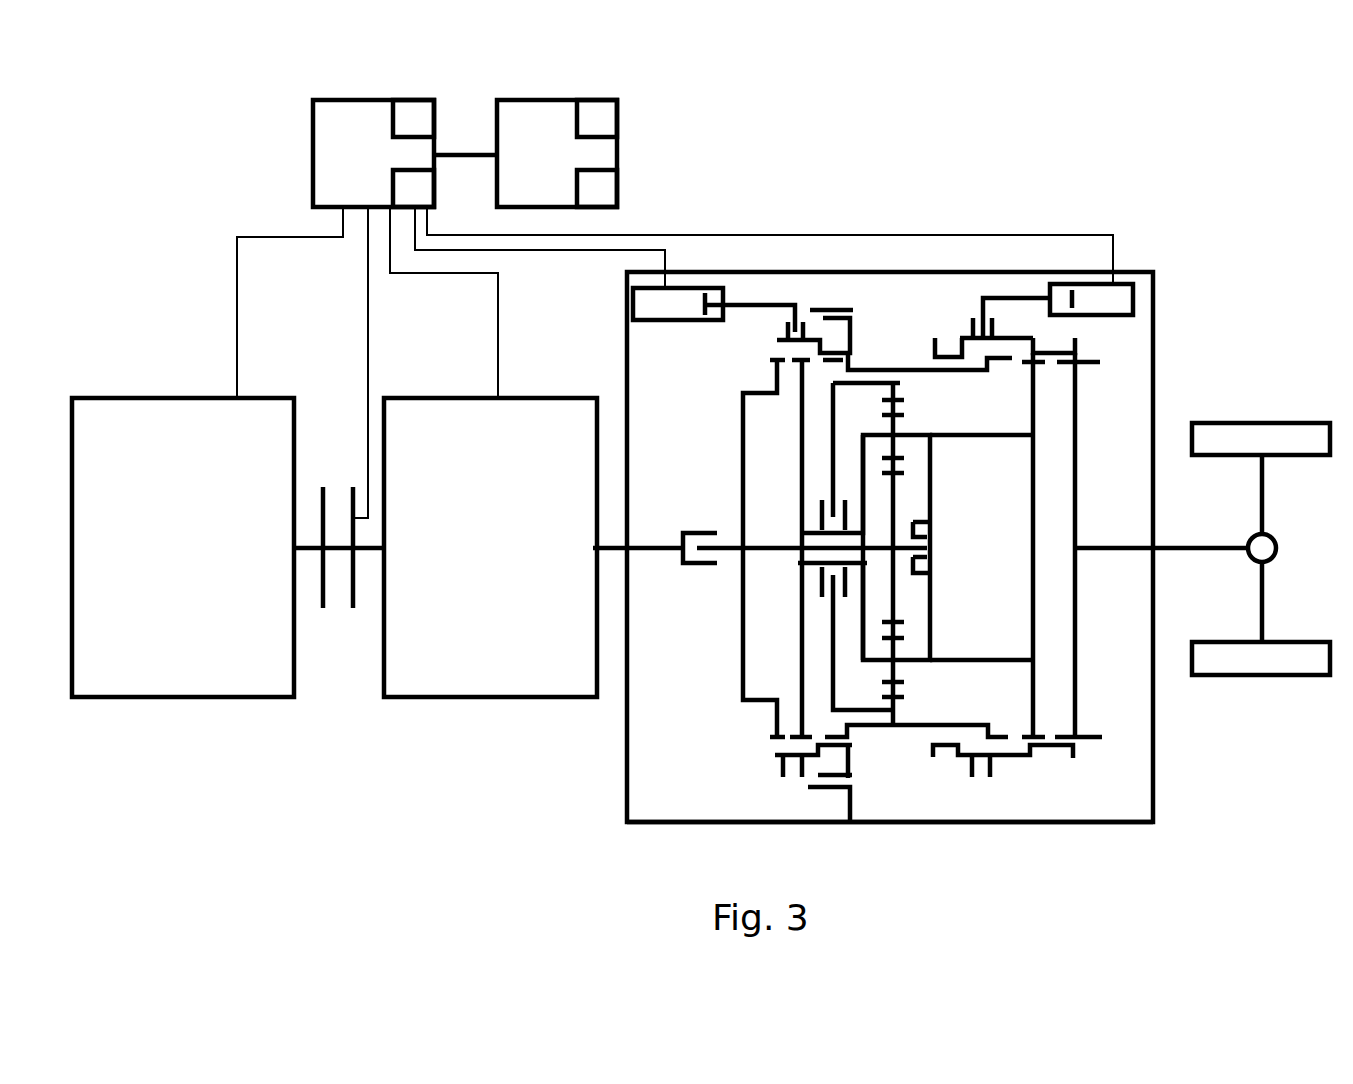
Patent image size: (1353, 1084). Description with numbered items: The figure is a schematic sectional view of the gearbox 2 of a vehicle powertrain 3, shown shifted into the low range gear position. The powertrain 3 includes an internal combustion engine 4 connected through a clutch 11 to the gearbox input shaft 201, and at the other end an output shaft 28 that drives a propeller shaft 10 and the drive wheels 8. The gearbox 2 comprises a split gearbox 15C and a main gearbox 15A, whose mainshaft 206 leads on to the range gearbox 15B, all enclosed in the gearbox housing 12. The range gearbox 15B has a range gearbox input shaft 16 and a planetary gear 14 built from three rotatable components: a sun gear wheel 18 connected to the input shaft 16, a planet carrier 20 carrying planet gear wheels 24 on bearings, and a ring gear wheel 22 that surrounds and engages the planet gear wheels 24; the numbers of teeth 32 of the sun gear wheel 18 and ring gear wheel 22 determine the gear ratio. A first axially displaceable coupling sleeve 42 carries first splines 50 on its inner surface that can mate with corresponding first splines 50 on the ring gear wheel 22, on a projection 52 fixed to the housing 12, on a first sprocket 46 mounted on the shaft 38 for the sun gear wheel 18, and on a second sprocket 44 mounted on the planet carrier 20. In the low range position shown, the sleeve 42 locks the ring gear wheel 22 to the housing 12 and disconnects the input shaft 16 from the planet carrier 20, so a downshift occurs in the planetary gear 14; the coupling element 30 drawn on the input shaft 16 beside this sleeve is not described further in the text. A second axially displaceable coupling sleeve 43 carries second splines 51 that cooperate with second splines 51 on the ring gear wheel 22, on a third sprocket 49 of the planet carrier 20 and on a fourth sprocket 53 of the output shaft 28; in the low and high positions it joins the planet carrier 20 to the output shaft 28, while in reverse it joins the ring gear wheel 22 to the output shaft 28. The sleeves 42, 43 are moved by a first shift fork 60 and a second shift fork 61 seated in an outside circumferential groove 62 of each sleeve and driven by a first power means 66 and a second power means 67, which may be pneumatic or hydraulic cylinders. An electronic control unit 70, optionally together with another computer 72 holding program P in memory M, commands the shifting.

The gearbox 2 is at (885, 186).
The powertrain 3 is at (594, 861).
The internal combustion engine 4 is at (170, 700).
The drive wheels 8 is at (1245, 422).
The propeller shaft 10 is at (1170, 545).
The clutch 11 is at (323, 680).
The gearbox housing 12 is at (1034, 275).
The planetary gear 14 is at (972, 597).
The main gearbox 15A is at (490, 606).
The range gearbox 15B is at (910, 823).
The split gearbox 15C is at (487, 700).
The range gearbox input shaft 16 is at (653, 548).
The sun gear wheel 18 is at (897, 620).
The planet carrier 20 is at (1038, 575).
The ring gear wheel 22 is at (893, 378).
The planet gear wheels 24 is at (930, 437).
The output shaft 28 is at (1128, 548).
The double clutch 30 is at (865, 547).
The teeth 32 is at (905, 640).
The shaft 38 is at (737, 548).
The first axially displaceable coupling sleeve 42 is at (857, 330).
The second axially displaceable coupling sleeve 43 is at (1080, 357).
The second sprocket 44 is at (802, 428).
The first sprocket 46 is at (743, 632).
The third sprocket 49 is at (1040, 387).
The first splines 50 is at (835, 310).
The second splines 51 is at (1000, 357).
The projection 52 is at (857, 292).
The fourth sprocket 53 is at (1078, 518).
The first shift fork 60 is at (733, 300).
The second shift fork 61 is at (982, 300).
The circumferential groove 62 is at (793, 767).
The first power means 66 is at (712, 266).
The second power means 67 is at (1137, 297).
The electronic control unit 70 is at (313, 133).
The computer 72 is at (617, 150).
The input shaft 201 is at (368, 680).
The mainshaft 206 is at (607, 546).